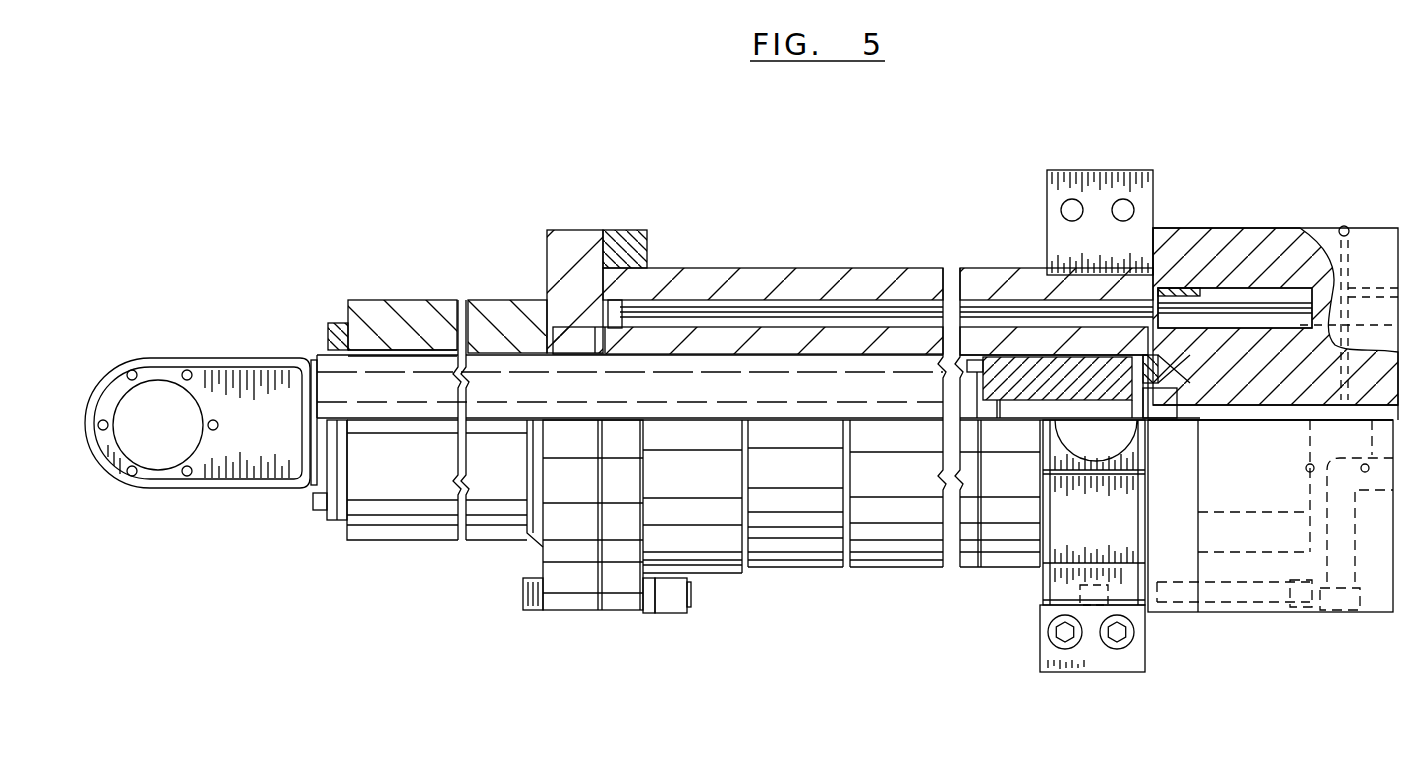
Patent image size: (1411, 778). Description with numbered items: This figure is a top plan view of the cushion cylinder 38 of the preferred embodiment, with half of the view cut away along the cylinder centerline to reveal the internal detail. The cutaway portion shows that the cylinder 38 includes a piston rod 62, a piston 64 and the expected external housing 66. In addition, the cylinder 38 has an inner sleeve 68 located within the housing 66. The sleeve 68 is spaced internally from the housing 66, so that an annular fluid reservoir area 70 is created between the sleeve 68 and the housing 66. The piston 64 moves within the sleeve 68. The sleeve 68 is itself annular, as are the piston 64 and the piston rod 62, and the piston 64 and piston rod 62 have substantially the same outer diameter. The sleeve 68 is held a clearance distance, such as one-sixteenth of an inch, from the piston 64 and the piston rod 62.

The cushion cylinder 38 is at (888, 515).
The piston rod 62 is at (890, 385).
The piston 64 is at (1040, 385).
The external housing 66 is at (798, 290).
The inner sleeve 68 is at (765, 340).
The annular fluid reservoir area 70 is at (1093, 300).